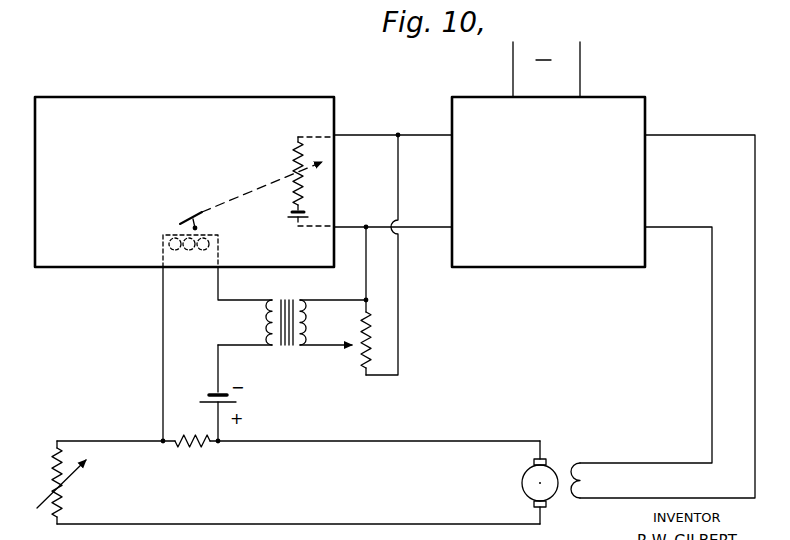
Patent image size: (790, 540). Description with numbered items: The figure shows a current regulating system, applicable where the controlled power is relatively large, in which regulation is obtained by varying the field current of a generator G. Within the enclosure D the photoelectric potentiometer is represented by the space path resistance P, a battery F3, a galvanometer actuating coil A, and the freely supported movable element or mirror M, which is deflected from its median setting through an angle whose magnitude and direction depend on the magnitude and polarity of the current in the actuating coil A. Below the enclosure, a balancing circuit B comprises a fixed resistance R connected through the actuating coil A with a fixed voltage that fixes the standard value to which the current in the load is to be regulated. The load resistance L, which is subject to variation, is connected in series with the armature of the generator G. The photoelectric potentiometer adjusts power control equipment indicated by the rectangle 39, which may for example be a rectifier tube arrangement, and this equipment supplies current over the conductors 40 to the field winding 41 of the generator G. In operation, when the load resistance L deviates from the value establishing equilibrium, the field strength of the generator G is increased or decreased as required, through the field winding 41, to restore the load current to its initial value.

The control device box D is at (148, 97).
The movable element or mirror M is at (183, 220).
The actuating coil A is at (191, 266).
The space path resistance P is at (296, 160).
The battery F3 is at (292, 218).
The balancing circuit B is at (163, 352).
The resistor R is at (190, 448).
The load resistance L is at (63, 487).
The generator G is at (522, 483).
The power control equipment 39 is at (548, 154).
The conductors 40 is at (712, 390).
The field winding 41 is at (585, 474).